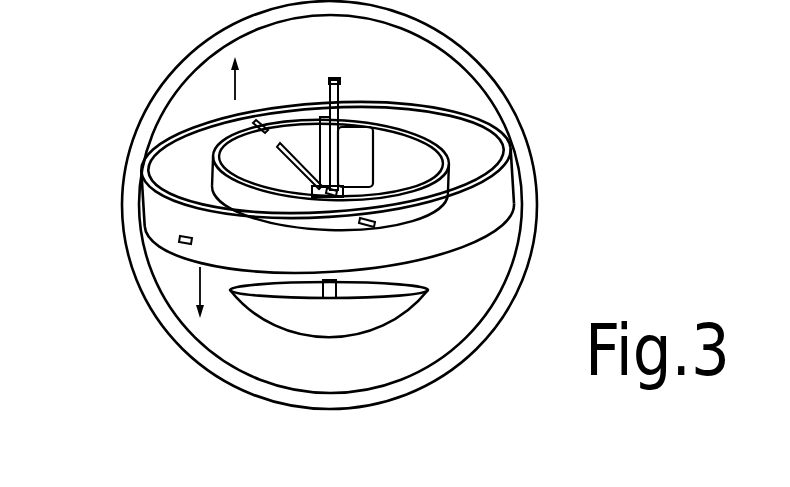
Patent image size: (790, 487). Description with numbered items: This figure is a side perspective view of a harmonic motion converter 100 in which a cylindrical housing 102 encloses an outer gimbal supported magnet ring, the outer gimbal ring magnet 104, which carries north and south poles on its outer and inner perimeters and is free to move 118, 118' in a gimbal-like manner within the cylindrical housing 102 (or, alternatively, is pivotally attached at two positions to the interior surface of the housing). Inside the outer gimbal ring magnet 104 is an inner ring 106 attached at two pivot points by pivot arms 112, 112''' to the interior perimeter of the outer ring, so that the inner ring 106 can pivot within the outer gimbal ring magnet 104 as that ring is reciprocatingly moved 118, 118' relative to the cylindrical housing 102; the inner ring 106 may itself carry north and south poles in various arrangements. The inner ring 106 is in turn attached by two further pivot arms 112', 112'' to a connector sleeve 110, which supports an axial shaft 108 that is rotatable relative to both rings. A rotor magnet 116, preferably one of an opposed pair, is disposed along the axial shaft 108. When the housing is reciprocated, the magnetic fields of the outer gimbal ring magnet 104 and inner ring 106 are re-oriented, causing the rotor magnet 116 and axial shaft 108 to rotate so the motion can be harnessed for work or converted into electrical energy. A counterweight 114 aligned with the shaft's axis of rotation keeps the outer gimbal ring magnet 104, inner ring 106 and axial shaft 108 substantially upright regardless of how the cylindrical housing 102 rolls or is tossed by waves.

The harmonic motion converter 100 is at (98, 74).
The cylindrical housing 102 is at (473, 63).
The outer gimbal ring magnet 104 is at (457, 240).
The inner ring 106 is at (445, 195).
The axial shaft 108 is at (340, 88).
The connector sleeve 110 is at (218, 186).
The pivot arm 112 is at (419, 256).
The pivot arm 112' is at (121, 233).
The pivot arm 112'' is at (305, 126).
The pivot arm 112''' is at (188, 92).
The counterweight 114 is at (383, 312).
The rotor magnet 116 is at (373, 142).
The gimbal-like movement 118 is at (143, 298).
The gimbal-like movement 118' is at (194, 50).